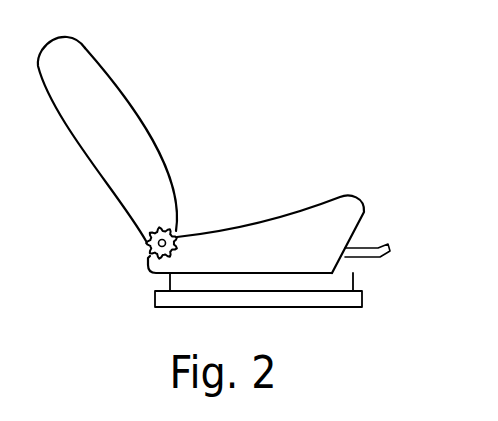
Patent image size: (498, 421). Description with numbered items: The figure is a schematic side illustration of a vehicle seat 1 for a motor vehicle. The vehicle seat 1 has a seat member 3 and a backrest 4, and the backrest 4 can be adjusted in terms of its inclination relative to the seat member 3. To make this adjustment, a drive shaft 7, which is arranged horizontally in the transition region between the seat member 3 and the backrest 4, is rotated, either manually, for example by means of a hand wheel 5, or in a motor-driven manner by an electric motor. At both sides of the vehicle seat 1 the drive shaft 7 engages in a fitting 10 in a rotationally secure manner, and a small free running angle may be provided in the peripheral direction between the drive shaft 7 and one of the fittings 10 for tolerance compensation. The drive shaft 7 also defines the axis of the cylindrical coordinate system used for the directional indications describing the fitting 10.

The vehicle seat 1 is at (173, 98).
The seat member 3 is at (273, 229).
The backrest 4 is at (87, 82).
The hand wheel 5 is at (183, 235).
The drive shaft 7 is at (149, 256).
The fitting 10 is at (146, 244).